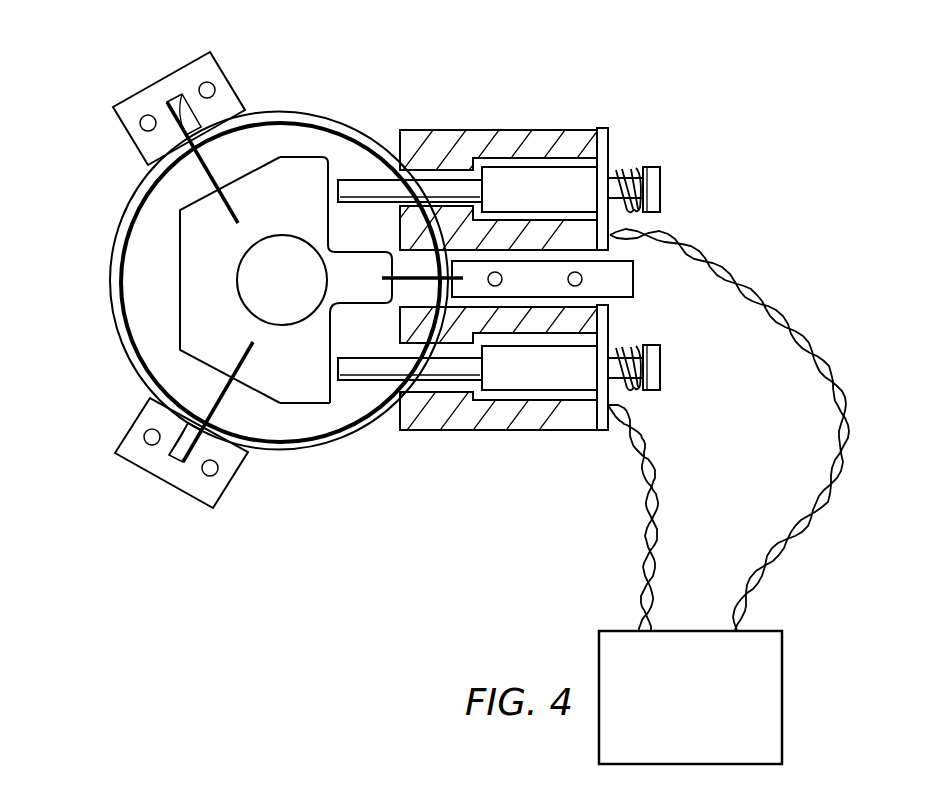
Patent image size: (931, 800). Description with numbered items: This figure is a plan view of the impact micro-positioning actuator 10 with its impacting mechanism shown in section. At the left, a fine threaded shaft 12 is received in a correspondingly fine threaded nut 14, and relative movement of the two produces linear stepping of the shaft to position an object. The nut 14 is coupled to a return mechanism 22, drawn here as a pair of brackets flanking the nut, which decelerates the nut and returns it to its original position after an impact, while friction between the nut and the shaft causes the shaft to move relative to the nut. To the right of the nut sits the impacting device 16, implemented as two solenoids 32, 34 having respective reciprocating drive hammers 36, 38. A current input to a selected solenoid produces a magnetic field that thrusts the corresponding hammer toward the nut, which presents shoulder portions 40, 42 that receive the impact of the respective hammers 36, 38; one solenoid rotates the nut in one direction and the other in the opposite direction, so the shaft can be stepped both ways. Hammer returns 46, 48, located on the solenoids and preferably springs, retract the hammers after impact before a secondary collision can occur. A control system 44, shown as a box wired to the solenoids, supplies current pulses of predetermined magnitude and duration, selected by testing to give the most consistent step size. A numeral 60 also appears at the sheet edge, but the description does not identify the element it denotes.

The impact micro-positioning actuator 10 is at (270, 560).
The fine threaded shaft 12 is at (285, 325).
The fine threaded nut 14 is at (168, 278).
The impacting device 16 is at (481, 148).
The return mechanism 22 is at (98, 143).
The solenoid 32 is at (511, 431).
The solenoid 34 is at (498, 130).
The reciprocating drive hammer 36 is at (572, 372).
The reciprocating drive hammer 38 is at (567, 176).
The shoulder portion 40 is at (304, 406).
The shoulder portion 42 is at (300, 156).
The control system 44 is at (679, 710).
The hammer return 46 is at (628, 348).
The hammer return 48 is at (618, 172).
The element 60 is at (186, 793).